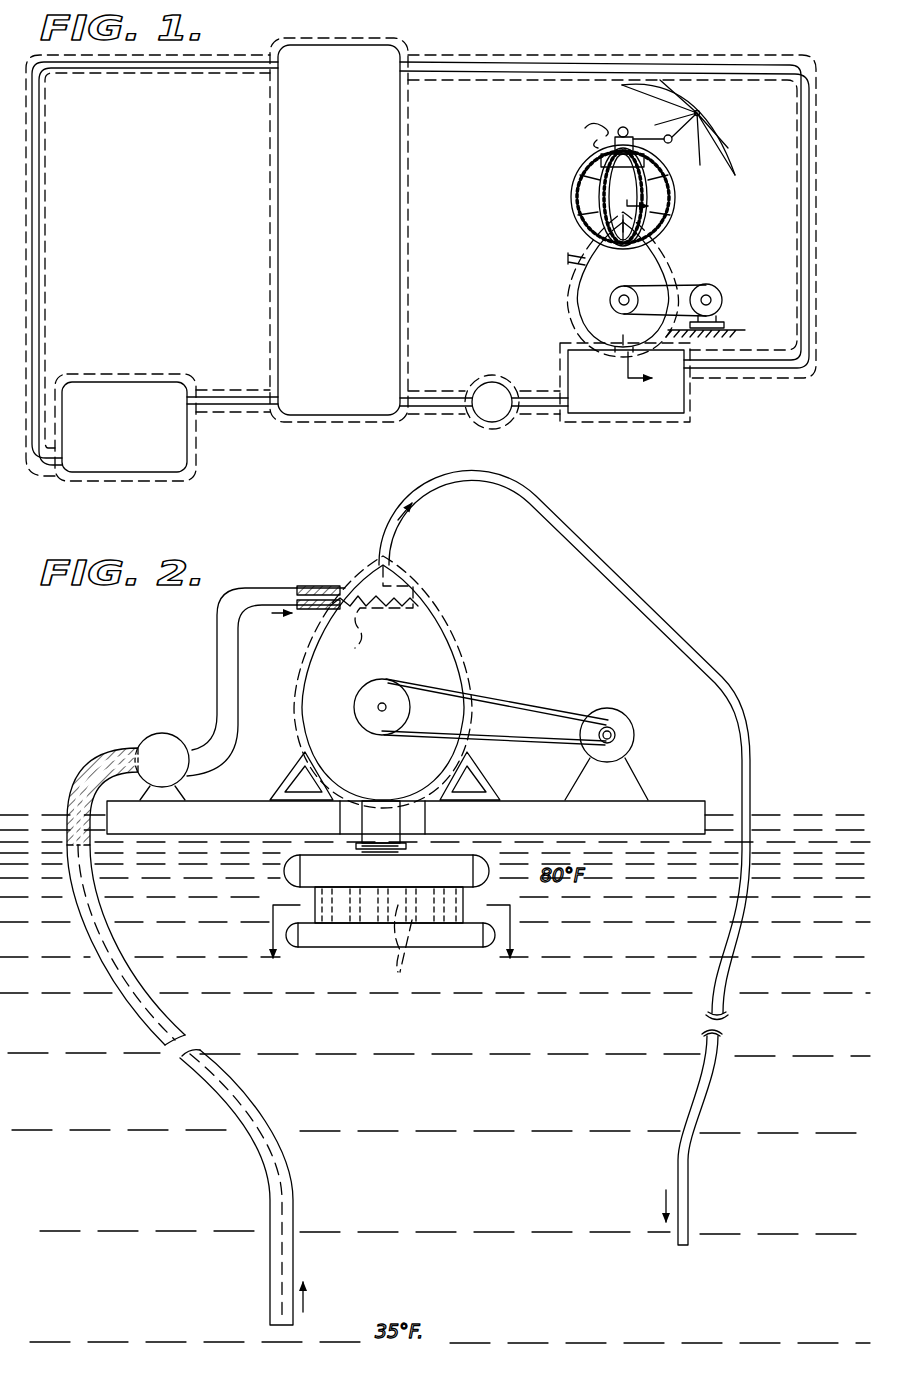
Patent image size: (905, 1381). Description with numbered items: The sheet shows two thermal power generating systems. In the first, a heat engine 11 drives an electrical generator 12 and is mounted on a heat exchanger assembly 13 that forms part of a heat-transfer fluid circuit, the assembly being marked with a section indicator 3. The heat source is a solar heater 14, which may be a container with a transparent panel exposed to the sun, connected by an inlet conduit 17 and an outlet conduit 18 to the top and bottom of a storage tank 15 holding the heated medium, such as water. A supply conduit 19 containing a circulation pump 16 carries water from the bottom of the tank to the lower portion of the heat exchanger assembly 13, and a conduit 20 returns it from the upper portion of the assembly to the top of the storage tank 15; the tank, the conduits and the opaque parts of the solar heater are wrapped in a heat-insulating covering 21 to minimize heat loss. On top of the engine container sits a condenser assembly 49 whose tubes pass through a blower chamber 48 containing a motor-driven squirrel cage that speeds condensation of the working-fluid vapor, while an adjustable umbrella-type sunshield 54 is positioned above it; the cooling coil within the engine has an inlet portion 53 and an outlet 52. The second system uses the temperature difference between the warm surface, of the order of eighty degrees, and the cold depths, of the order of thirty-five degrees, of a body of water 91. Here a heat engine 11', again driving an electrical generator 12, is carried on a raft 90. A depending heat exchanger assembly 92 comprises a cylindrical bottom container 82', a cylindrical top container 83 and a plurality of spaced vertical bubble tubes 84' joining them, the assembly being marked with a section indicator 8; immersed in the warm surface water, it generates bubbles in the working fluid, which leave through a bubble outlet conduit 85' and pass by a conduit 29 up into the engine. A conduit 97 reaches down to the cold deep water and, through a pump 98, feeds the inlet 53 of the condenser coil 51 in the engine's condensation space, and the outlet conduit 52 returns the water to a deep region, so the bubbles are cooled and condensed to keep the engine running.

In FIG. 1, the heat engine 11 is at (648, 284).
In FIG. 2, the heat engine 11' is at (439, 682).
In FIG. 1, the electrical generator 12 is at (722, 302).
In FIG. 2, the electrical generator 12 is at (634, 745).
In FIG. 1, the heat exchanger assembly 13 is at (670, 402).
In FIG. 1, the solar heater 14 is at (110, 384).
In FIG. 1, the storage tank 15 is at (390, 300).
In FIG. 1, the circulation pump 16 is at (494, 382).
In FIG. 1, the inlet conduit 17 is at (36, 464).
In FIG. 1, the outlet conduit 18 is at (232, 406).
In FIG. 1, the supply conduit 19 is at (530, 408).
In FIG. 1, the conduit 20 is at (815, 226).
In FIG. 1, the heat-insulating covering 21 is at (38, 252).
In FIG. 2, the conduit 29 is at (402, 820).
In FIG. 1, the blower chamber 48 is at (600, 152).
In FIG. 1, the condenser assembly 49 is at (678, 192).
In FIG. 2, the condenser tubing 51 is at (374, 607).
In FIG. 1, the outlet end of condenser tubing 52 is at (574, 216).
In FIG. 2, the outlet end of condenser tubing 52 is at (392, 560).
In FIG. 1, the inlet portion of condenser tubing 53 is at (570, 262).
In FIG. 2, the inlet portion of condenser tubing 53 is at (312, 592).
In FIG. 1, the umbrella-type sunshield 54 is at (718, 150).
In FIG. 2, the bottom container 82' is at (389, 938).
In FIG. 2, the top container 83 is at (300, 862).
In FIG. 2, the bubble tubes 84' is at (410, 948).
In FIG. 2, the bubble outlet conduit 85' is at (389, 864).
In FIG. 2, the raft 90 is at (214, 810).
In FIG. 2, the body of water 91 is at (788, 815).
In FIG. 2, the heat exchanger assembly 92 is at (445, 945).
In FIG. 2, the conduit 97 is at (245, 1145).
In FIG. 2, the pump 98 is at (142, 744).
In FIG. 2, the section line 8 is at (385, 921).
In FIG. 1, the section line 3 is at (628, 287).